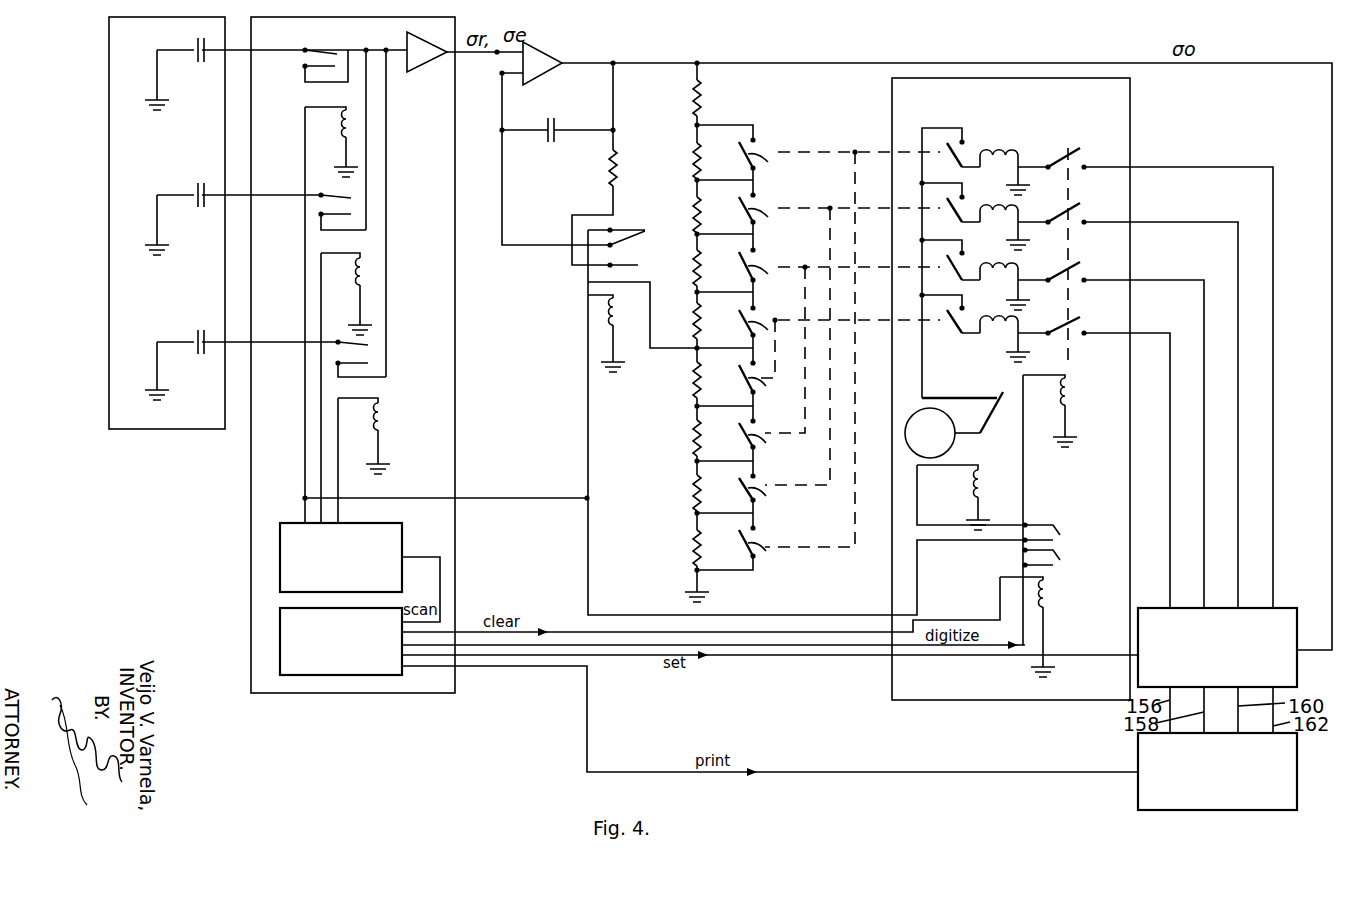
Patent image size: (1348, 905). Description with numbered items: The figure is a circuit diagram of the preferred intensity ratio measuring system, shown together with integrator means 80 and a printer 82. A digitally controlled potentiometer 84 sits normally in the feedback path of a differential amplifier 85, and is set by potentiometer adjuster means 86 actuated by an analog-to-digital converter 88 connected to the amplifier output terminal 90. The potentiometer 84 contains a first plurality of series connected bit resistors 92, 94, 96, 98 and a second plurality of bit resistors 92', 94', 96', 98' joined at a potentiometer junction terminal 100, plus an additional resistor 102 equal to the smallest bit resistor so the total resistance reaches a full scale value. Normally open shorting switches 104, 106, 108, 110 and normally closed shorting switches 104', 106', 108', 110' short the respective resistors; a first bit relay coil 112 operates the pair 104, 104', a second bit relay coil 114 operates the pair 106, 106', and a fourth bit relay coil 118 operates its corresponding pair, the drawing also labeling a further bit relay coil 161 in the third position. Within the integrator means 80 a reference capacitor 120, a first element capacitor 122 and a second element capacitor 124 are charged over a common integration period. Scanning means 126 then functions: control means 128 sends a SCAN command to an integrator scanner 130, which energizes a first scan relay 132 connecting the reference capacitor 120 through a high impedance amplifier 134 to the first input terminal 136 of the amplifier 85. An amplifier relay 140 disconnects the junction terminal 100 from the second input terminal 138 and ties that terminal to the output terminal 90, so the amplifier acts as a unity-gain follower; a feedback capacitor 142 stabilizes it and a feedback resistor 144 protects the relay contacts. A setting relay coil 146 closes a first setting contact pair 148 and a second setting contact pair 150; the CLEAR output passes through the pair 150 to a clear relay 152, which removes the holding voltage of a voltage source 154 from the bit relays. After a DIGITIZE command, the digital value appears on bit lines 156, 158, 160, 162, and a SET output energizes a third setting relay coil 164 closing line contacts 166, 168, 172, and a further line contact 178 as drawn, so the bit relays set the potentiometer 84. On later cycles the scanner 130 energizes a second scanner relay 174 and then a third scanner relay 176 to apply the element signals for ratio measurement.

The integrator means 80 is at (108, 315).
The printer 82 is at (1140, 800).
The digitally controlled potentiometer 84 is at (752, 110).
The differential amplifier 85 is at (542, 57).
The potentiometer adjuster means 86 is at (888, 667).
The analog-to-digital converter 88 is at (1297, 676).
The amplifier output terminal 90 is at (616, 60).
The bit resistor 92 is at (695, 319).
The bit resistor 92' is at (689, 418).
The bit resistor 94 is at (695, 265).
The bit resistor 94' is at (667, 445).
The bit resistor 96 is at (693, 210).
The bit resistor 96' is at (688, 499).
The bit resistor 98 is at (693, 155).
The bit resistor 98' is at (684, 554).
The potentiometer junction terminal 100 is at (693, 350).
The additional resistor 102 is at (692, 88).
The shorting switch 104 is at (839, 344).
The shorting switch 104' is at (768, 384).
The shorting switch 106 is at (839, 342).
The shorting switch 106' is at (772, 442).
The shorting switch 108 is at (839, 341).
The shorting switch 108' is at (773, 497).
The shorting switch 110 is at (839, 344).
The shorting switch 110' is at (776, 554).
The first bit relay coil 112 is at (998, 315).
The second bit relay coil 114 is at (998, 262).
The fourth bit relay coil 118 is at (1000, 146).
The reference capacitor 120 is at (225, 74).
The first element capacitor 122 is at (233, 219).
The second element capacitor 124 is at (241, 365).
The scanning means 126 is at (247, 516).
The control means 128 is at (290, 640).
The integrator scanner 130 is at (280, 577).
The first scan relay 132 is at (345, 96).
The high impedance amplifier 134 is at (427, 67).
The first input terminal 136 is at (495, 58).
The second input terminal 138 is at (504, 76).
The amplifier relay 140 is at (585, 288).
The feedback capacitor 142 is at (557, 146).
The feedback resistor 144 is at (604, 170).
The setting relay coil 146 is at (1050, 598).
The first setting contact pair 148 is at (1058, 560).
The second setting contact pair 150 is at (1058, 538).
The clear relay 152 is at (974, 488).
The voltage source 154 is at (950, 443).
The bit line 156 is at (1155, 337).
The bit line 158 is at (1162, 281).
The bit line 160 is at (1172, 222).
The relay coil 161 is at (998, 203).
The bit line 162 is at (1197, 170).
The third setting relay coil 164 is at (1070, 397).
The line contact 166 is at (1079, 322).
The line contact 168 is at (1075, 266).
The line contact 172 is at (1060, 160).
The second scanner relay 174 is at (360, 280).
The third scanner relay 176 is at (378, 420).
The switch 178 is at (1080, 206).